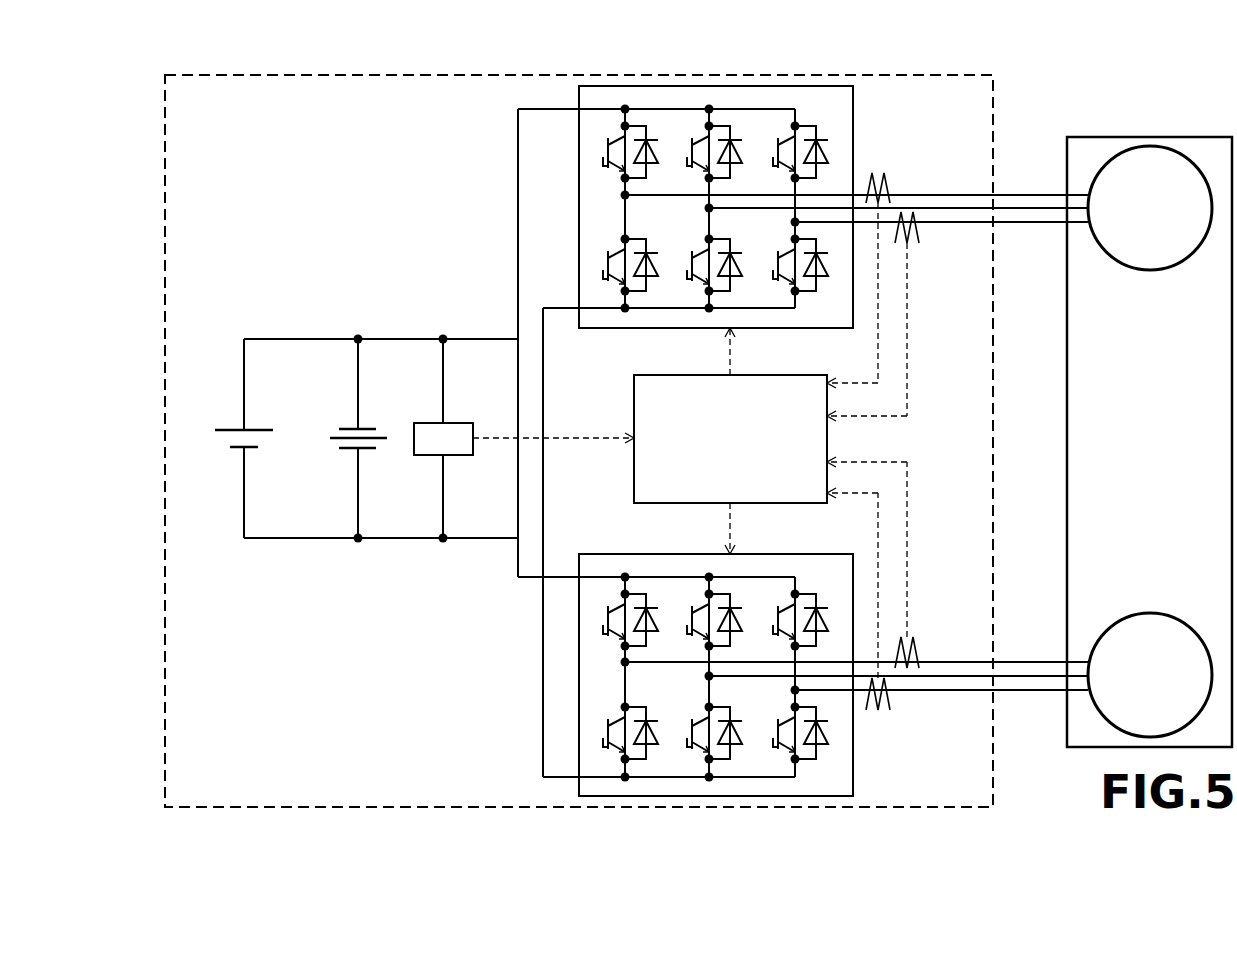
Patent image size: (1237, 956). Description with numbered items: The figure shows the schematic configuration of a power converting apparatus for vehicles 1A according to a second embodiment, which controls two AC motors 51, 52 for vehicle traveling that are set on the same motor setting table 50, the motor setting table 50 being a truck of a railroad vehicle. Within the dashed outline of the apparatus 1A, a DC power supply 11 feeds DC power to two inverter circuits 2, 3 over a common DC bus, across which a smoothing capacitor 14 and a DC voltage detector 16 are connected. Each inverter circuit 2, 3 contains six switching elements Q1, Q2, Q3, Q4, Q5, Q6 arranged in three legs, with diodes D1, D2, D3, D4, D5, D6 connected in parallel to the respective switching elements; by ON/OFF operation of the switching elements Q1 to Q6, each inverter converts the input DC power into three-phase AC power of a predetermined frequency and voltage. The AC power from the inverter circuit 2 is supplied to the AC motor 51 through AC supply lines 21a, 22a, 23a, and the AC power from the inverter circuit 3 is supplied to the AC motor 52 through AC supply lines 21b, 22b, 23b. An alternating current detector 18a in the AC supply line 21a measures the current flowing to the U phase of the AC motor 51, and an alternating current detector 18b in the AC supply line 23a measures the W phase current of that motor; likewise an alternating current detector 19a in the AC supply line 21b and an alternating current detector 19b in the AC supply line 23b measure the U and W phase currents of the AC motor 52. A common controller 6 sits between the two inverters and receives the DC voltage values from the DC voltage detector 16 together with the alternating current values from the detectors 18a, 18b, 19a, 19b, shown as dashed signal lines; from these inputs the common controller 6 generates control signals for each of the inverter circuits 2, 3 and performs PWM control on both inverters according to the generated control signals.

The power converting apparatus for vehicles 1A is at (745, 75).
The inverter circuit 2 is at (853, 103).
The inverter circuit 3 is at (853, 755).
The common controller 6 is at (634, 386).
The DC power supply 11 is at (258, 429).
The smoothing capacitor 14 is at (371, 429).
The DC voltage detector 16 is at (460, 423).
The alternating current detector 18a is at (888, 183).
The alternating current detector 18b is at (917, 235).
The alternating current detector 19a is at (918, 650).
The alternating current detector 19b is at (890, 700).
The AC supply line 21a is at (1025, 193).
The AC supply line 22a is at (1015, 212).
The AC supply line 23a is at (1045, 225).
The AC supply line 21b is at (1025, 660).
The AC supply line 22b is at (1015, 680).
The AC supply line 23b is at (1045, 693).
The motor setting table 50 is at (1150, 137).
The AC motor 51 is at (1150, 271).
The AC motor 52 is at (1150, 613).
The switching element Q1 is at (606, 383).
The switching element Q2 is at (606, 497).
The switching element Q3 is at (691, 383).
The switching element Q4 is at (691, 497).
The switching element Q5 is at (776, 383).
The switching element Q6 is at (776, 497).
The diode D1 is at (655, 392).
The diode D2 is at (655, 506).
The diode D3 is at (739, 392).
The diode D4 is at (739, 506).
The diode D5 is at (825, 392).
The diode D6 is at (825, 506).